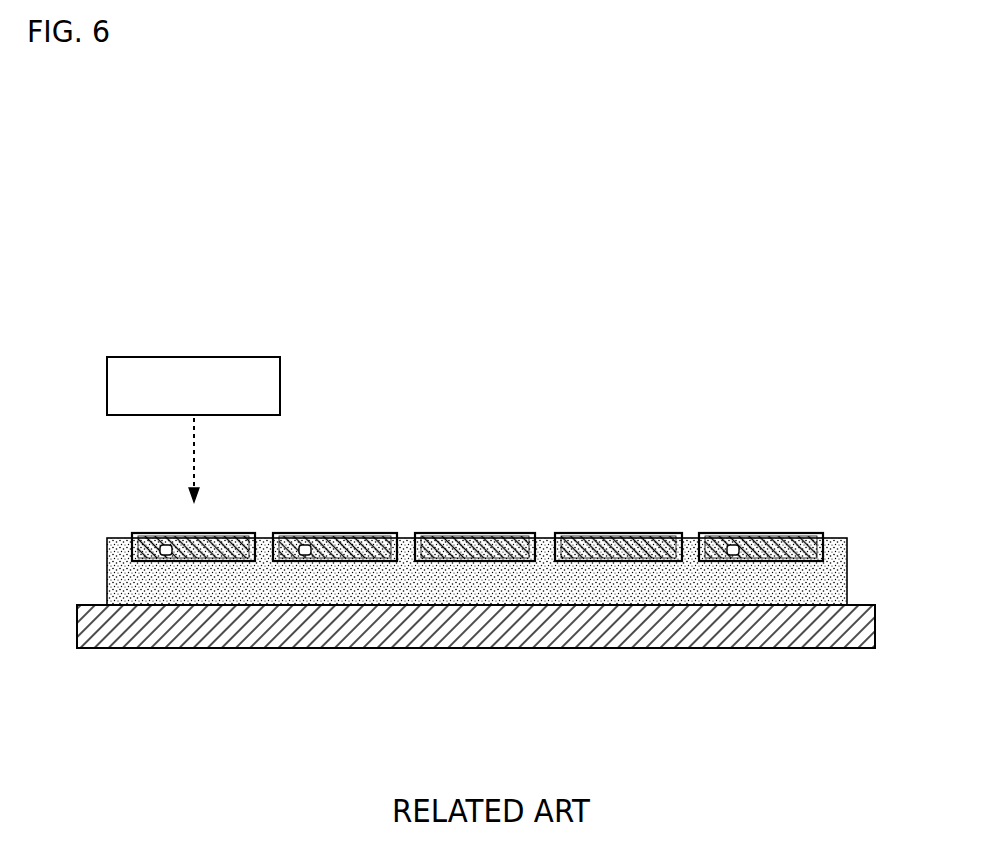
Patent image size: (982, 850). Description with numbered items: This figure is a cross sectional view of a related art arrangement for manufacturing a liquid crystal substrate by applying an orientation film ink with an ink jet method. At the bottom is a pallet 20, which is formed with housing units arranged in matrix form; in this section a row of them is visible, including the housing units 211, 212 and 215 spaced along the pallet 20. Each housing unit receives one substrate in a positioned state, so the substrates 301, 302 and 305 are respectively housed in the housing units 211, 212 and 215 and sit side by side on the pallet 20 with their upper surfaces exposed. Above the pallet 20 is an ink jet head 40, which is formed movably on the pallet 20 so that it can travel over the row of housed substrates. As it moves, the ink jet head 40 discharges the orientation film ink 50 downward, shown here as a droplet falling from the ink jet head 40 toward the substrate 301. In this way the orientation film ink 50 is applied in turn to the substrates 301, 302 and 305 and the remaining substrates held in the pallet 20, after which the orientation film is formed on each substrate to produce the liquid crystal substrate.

The pallet 20 is at (121, 538).
The substrate 301 is at (228, 533).
The substrate 302 is at (373, 533).
The substrate 305 is at (799, 533).
The housing unit 211 is at (168, 555).
The housing unit 212 is at (306, 555).
The housing unit 215 is at (735, 555).
The ink jet head 40 is at (197, 357).
The orientation film ink 50 is at (194, 444).